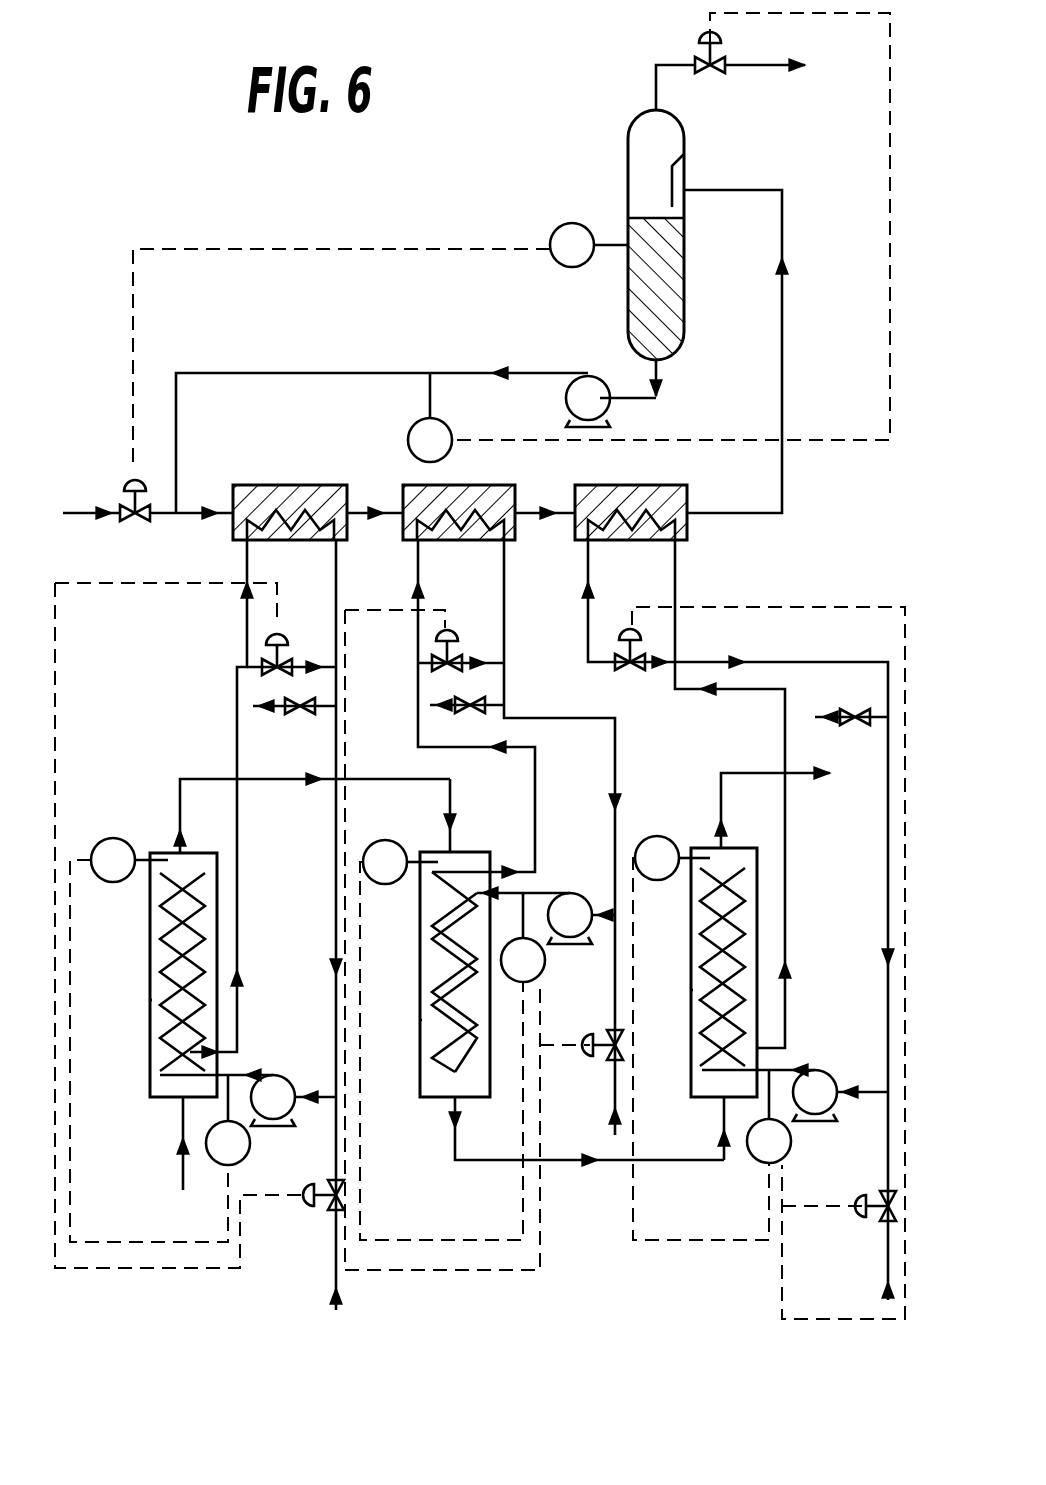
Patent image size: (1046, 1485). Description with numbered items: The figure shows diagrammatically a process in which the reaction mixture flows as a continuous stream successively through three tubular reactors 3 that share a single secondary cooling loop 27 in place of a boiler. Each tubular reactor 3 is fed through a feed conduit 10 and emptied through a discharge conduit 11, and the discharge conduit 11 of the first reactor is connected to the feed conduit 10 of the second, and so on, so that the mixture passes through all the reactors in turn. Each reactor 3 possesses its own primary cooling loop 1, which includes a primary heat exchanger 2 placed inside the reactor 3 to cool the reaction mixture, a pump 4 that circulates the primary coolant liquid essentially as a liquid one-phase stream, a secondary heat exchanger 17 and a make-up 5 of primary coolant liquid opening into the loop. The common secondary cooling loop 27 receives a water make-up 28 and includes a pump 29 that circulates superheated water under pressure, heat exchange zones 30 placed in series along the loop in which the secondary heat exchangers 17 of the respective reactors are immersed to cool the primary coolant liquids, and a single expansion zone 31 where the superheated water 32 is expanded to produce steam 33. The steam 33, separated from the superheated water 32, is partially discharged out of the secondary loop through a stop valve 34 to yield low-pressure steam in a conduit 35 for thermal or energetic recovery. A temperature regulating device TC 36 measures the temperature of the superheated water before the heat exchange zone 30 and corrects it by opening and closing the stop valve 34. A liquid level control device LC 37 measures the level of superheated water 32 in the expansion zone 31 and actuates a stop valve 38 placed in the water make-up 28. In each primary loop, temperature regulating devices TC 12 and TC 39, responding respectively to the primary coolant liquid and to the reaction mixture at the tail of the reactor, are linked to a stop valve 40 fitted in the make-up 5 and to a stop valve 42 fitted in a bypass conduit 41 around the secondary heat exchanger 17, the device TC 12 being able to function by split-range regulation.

The primary cooling loop 1 is at (237, 680).
The primary heat exchanger 2 is at (152, 948).
The tubular reactor 3 is at (150, 1000).
The pump 4 is at (284, 1118).
The make-up of primary coolant liquid 5 is at (336, 1270).
The feed conduit 10 is at (183, 1168).
The discharge conduit 11 is at (180, 782).
The temperature regulating device TC 12 is at (250, 1140).
The secondary heat exchanger 17 is at (266, 536).
The secondary cooling loop 27 is at (262, 373).
The water make-up 28 is at (82, 505).
The pump 29 is at (580, 382).
The heat exchange zone 30 is at (320, 486).
The expansion zone 31 is at (628, 178).
The superheated water 32 is at (672, 306).
The steam 33 is at (640, 130).
The stop valve 34 is at (700, 58).
The conduit 35 is at (817, 66).
The temperature regulating device TC 36 is at (410, 434).
The control device for detection of liquid level LC 37 is at (556, 228).
The stop valve 38 is at (130, 520).
The temperature regulating device TC 39 is at (115, 838).
The stop valve 40 is at (308, 1202).
The bypass conduit 41 is at (322, 640).
The stop valve 42 is at (284, 622).